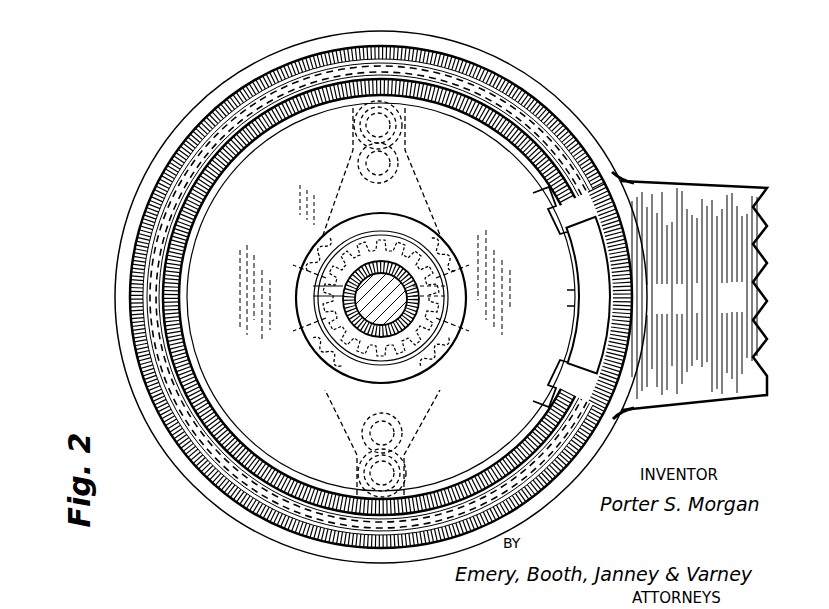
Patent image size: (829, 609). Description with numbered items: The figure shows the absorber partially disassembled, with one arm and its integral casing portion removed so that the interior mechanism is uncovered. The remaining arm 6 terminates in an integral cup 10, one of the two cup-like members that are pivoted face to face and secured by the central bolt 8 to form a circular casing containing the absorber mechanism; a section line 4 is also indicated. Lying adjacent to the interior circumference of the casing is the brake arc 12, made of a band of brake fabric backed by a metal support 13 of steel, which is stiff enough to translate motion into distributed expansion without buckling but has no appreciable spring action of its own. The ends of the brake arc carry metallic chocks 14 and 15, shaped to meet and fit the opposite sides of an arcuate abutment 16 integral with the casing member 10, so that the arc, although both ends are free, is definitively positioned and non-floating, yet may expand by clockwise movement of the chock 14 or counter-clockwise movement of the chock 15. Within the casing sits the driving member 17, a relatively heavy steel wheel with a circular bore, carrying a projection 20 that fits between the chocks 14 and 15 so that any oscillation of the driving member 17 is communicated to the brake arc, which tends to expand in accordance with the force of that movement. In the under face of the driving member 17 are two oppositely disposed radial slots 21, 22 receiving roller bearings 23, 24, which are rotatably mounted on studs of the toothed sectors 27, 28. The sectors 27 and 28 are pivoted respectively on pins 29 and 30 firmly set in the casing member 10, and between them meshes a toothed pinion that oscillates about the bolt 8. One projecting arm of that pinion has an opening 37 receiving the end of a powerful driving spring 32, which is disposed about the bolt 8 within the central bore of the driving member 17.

The section line 4 is at (378, 25).
The arm 6 is at (690, 200).
The bolt 8 is at (366, 296).
The cup 10 is at (135, 223).
The brake arc 12 is at (228, 127).
The metal support 13 is at (257, 120).
The metallic chock 14 is at (562, 365).
The metallic chock 15 is at (560, 237).
The arcuate abutment 16 is at (588, 295).
The driving member 17 is at (375, 303).
The projection 20 is at (572, 300).
The radial slot 21 is at (363, 448).
The radial slot 22 is at (353, 163).
The roller bearing 23 is at (363, 477).
The roller bearing 24 is at (400, 127).
The toothed sector 27 is at (320, 356).
The toothed sector 28 is at (330, 194).
The pin 29 is at (393, 430).
The pin 30 is at (390, 170).
The driving spring 32 is at (333, 310).
The opening 37 is at (438, 302).